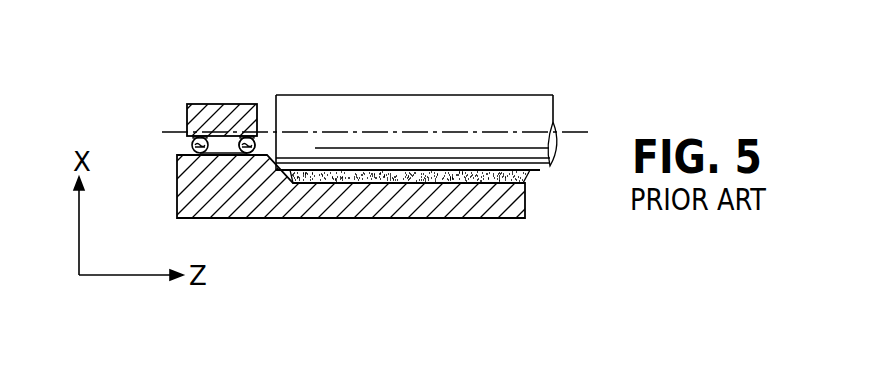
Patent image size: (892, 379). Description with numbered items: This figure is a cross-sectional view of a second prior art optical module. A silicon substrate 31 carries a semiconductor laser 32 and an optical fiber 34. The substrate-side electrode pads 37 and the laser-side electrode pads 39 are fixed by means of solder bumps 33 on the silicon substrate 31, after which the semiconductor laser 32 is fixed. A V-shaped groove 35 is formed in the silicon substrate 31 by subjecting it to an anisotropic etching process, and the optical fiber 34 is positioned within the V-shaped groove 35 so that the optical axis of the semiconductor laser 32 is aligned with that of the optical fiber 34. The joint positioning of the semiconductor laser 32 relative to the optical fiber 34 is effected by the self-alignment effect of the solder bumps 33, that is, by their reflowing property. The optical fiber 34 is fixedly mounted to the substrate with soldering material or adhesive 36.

The silicon substrate 31 is at (315, 203).
The semiconductor laser 32 is at (213, 103).
The solder bumps 33 is at (243, 135).
The optical fiber 34 is at (458, 108).
The V-shaped groove 35 is at (428, 184).
The soldering material or adhesive 36 is at (371, 182).
The substrate-side electrode pads 37 is at (242, 150).
The laser-side electrode pads 39 is at (196, 133).